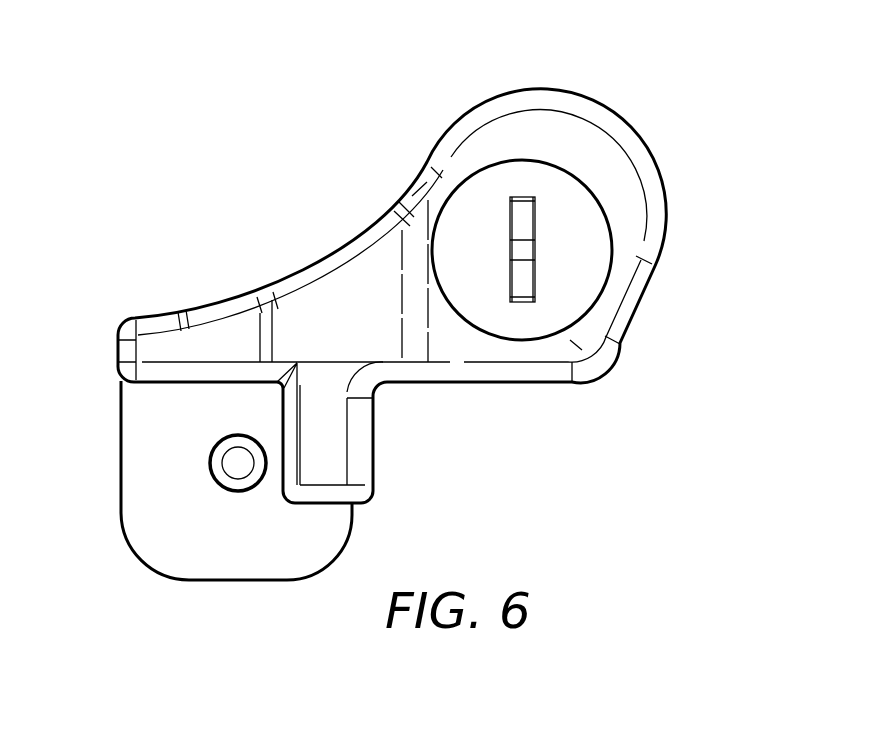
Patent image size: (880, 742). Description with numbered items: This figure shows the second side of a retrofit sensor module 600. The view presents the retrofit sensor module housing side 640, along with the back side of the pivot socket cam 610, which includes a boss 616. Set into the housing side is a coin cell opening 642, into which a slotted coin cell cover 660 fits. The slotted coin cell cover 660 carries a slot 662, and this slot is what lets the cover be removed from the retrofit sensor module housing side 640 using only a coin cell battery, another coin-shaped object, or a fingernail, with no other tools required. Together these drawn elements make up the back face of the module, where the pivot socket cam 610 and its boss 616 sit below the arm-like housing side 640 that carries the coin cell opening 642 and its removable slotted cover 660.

The retrofit sensor module 600 is at (260, 164).
The pivot socket cam 610 is at (227, 581).
The boss 616 is at (233, 460).
The retrofit sensor module housing side 640 is at (457, 341).
The coin cell opening 642 is at (560, 160).
The slotted coin cell cover 660 is at (580, 278).
The slot 662 is at (523, 223).